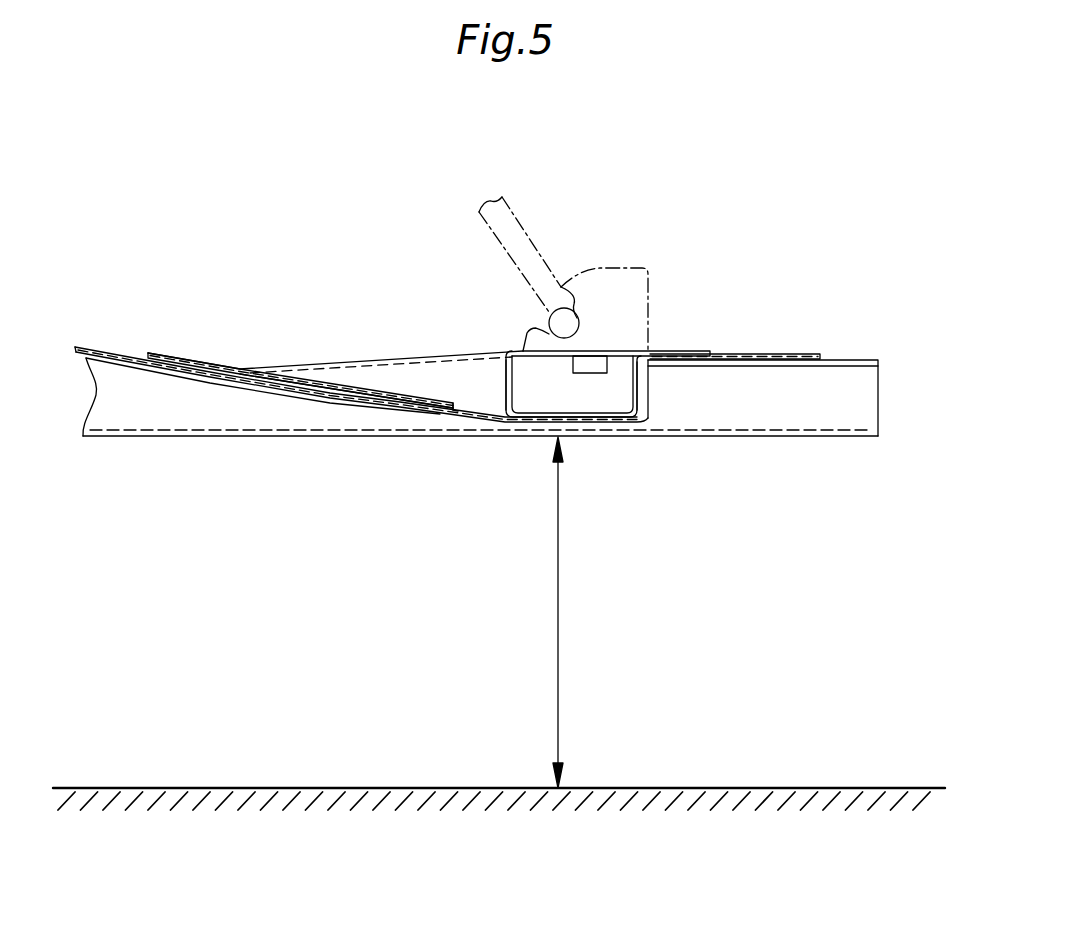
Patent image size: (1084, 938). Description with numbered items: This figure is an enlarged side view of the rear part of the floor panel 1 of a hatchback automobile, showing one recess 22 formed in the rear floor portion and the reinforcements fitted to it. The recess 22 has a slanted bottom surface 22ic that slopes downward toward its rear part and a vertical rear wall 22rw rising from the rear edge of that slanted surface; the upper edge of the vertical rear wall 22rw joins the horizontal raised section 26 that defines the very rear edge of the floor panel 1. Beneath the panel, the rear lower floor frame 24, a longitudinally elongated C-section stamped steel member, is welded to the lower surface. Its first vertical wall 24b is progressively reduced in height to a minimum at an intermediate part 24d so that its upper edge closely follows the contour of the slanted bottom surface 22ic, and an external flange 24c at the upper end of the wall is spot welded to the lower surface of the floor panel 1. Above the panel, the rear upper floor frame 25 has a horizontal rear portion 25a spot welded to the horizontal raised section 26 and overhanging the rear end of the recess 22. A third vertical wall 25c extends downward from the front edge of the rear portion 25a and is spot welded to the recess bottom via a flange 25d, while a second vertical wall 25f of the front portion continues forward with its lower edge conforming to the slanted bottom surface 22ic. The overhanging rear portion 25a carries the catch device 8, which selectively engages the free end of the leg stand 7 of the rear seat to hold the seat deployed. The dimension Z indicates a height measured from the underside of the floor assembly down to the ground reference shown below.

The floor panel 1 is at (133, 357).
The leg stand 7 is at (528, 237).
The catch device 8 is at (648, 264).
The recess 22 is at (558, 395).
The slanted bottom surface 22ic is at (356, 390).
The vertical rear wall 22rw is at (633, 360).
The rear lower floor frame 24 is at (760, 442).
The first vertical wall 24b is at (817, 420).
The external flange 24c is at (167, 367).
The intermediate part 24d is at (580, 416).
The rear upper floor frame 25 is at (377, 344).
The rear portion 25a is at (606, 372).
The third vertical wall 25c is at (503, 385).
The flange 25d is at (464, 400).
The second vertical wall 25f is at (420, 383).
The horizontal raised section 26 is at (757, 353).
The height dimension Z is at (547, 612).